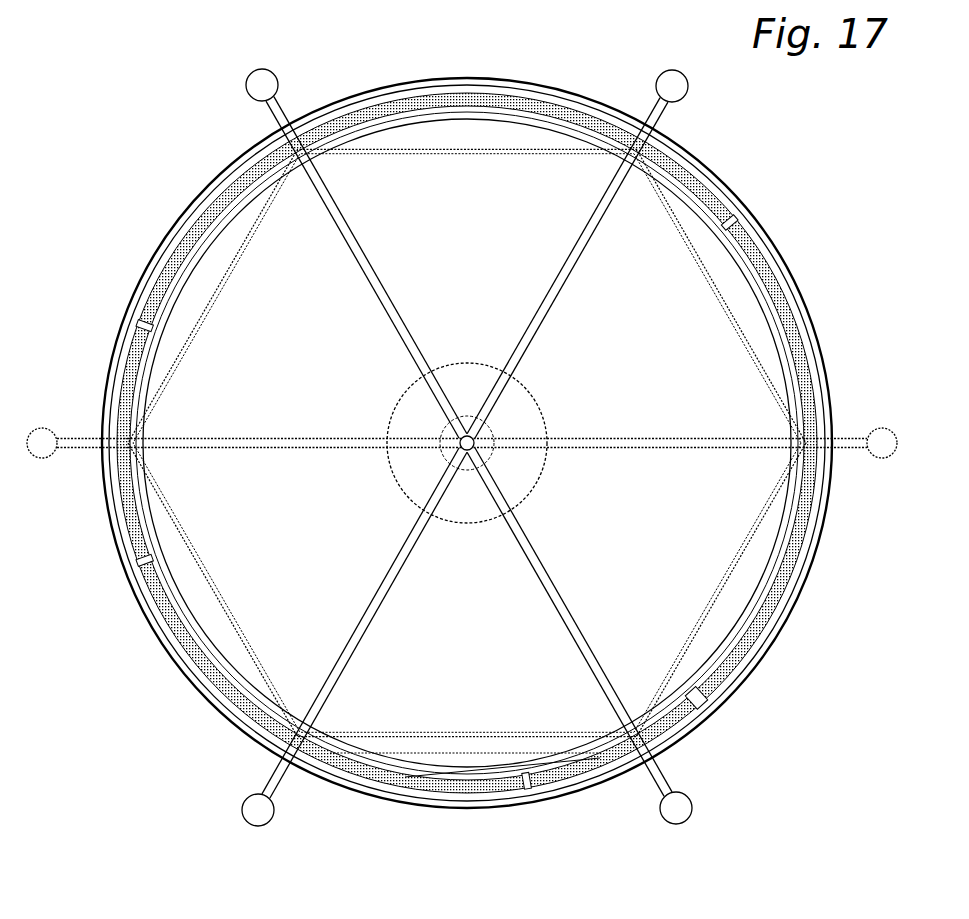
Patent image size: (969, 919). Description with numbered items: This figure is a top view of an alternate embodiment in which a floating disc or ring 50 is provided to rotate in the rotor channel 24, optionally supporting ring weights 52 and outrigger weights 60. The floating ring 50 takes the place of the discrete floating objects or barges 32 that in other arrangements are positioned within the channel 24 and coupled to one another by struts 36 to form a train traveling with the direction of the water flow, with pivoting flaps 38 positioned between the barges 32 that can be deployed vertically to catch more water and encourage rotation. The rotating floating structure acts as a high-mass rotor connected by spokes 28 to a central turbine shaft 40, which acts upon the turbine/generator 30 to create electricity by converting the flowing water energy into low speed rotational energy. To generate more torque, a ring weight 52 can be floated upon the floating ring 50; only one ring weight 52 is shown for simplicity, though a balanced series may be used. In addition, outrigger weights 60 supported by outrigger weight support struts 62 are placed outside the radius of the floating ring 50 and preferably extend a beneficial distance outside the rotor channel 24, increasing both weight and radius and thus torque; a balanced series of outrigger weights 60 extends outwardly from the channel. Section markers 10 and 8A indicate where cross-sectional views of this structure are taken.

The rotor channel 24 is at (732, 183).
The floating ring 50 is at (783, 247).
The ring weight 52 is at (695, 725).
The struts 36 is at (187, 350).
The barges 32 is at (600, 765).
The pivoting flaps 38 is at (140, 322).
The spokes 28 is at (462, 440).
The outrigger weight support struts 62 is at (278, 115).
The outrigger weights 60 is at (262, 84).
The turbine/generator 30 is at (478, 363).
The central turbine shaft 40 is at (478, 438).
The section line 10 is at (175, 462).
The section line 8A, 8B, 9 8A is at (700, 548).